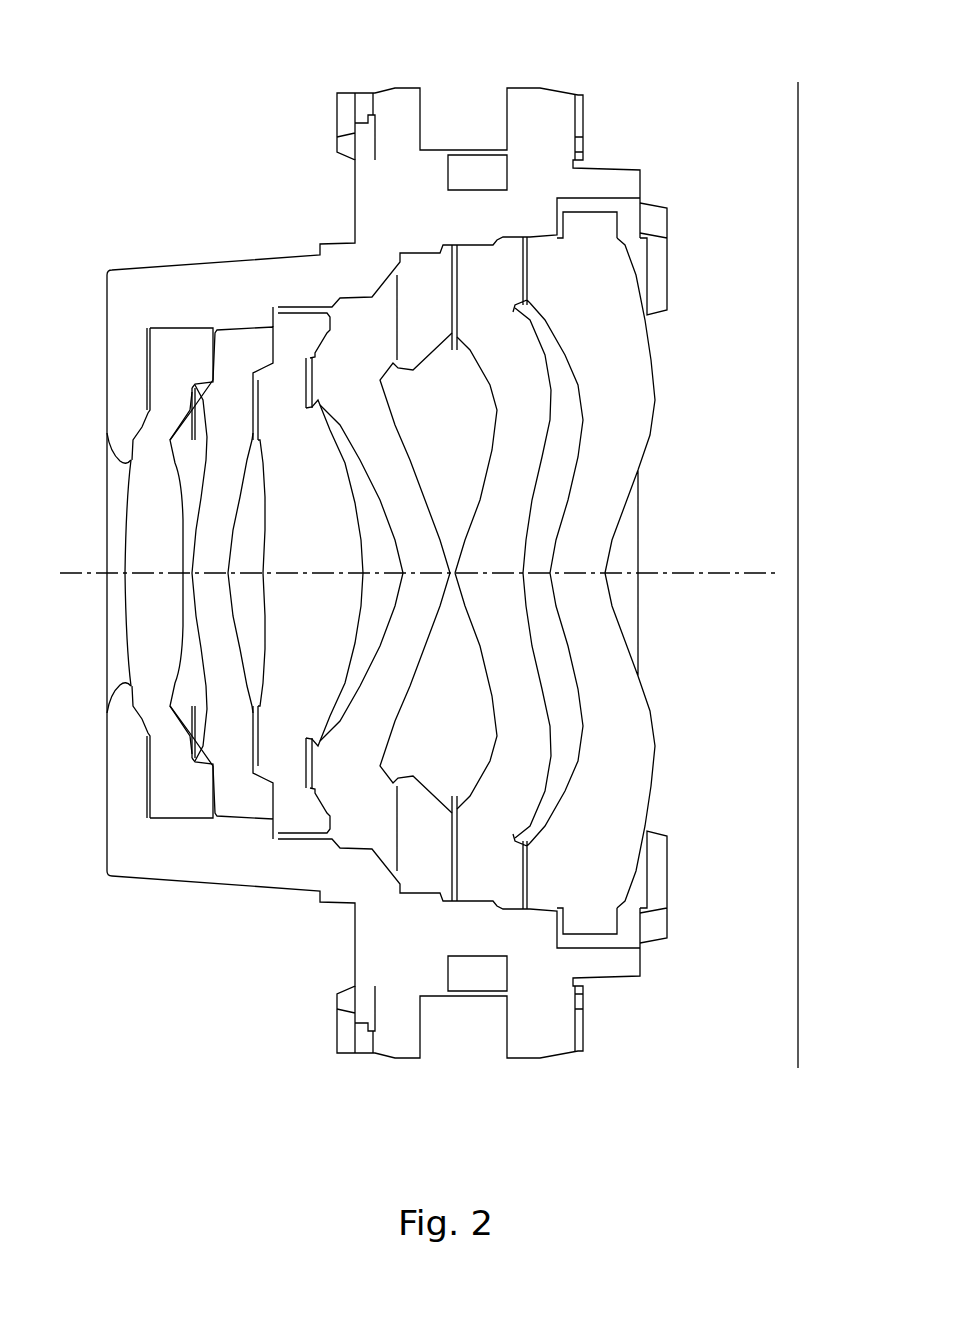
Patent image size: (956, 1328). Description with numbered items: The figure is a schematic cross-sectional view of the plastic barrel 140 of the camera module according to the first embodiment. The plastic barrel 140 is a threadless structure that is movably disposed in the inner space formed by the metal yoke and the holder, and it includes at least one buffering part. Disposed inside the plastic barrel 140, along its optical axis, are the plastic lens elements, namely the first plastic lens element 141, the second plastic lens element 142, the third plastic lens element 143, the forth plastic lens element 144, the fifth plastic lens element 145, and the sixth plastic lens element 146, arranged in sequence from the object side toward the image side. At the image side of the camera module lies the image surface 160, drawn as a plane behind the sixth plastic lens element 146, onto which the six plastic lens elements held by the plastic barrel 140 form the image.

The plastic barrel 140 is at (193, 277).
The first plastic lens element 141 is at (177, 780).
The second plastic lens element 142 is at (242, 793).
The third plastic lens element 143 is at (298, 805).
The forth plastic lens element 144 is at (362, 813).
The fifth plastic lens element 145 is at (493, 863).
The sixth plastic lens element 146 is at (590, 895).
The image surface 160 is at (797, 92).